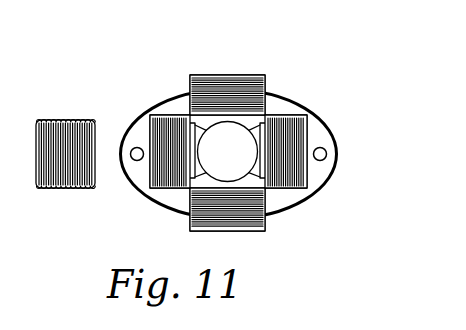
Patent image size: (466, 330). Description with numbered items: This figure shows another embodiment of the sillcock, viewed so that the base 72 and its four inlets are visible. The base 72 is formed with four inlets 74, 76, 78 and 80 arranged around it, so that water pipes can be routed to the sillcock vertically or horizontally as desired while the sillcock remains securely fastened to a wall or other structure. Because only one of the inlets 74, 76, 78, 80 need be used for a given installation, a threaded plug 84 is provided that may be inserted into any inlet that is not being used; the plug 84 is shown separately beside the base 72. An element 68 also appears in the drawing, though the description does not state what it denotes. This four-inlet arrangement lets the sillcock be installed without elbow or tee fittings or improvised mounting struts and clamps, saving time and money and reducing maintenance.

The housing plate 68 is at (272, 89).
The base 72 is at (282, 107).
The inlet 74 is at (208, 75).
The inlet 76 is at (243, 233).
The inlet 78 is at (148, 132).
The inlet 80 is at (305, 128).
The threaded plug 84 is at (72, 188).